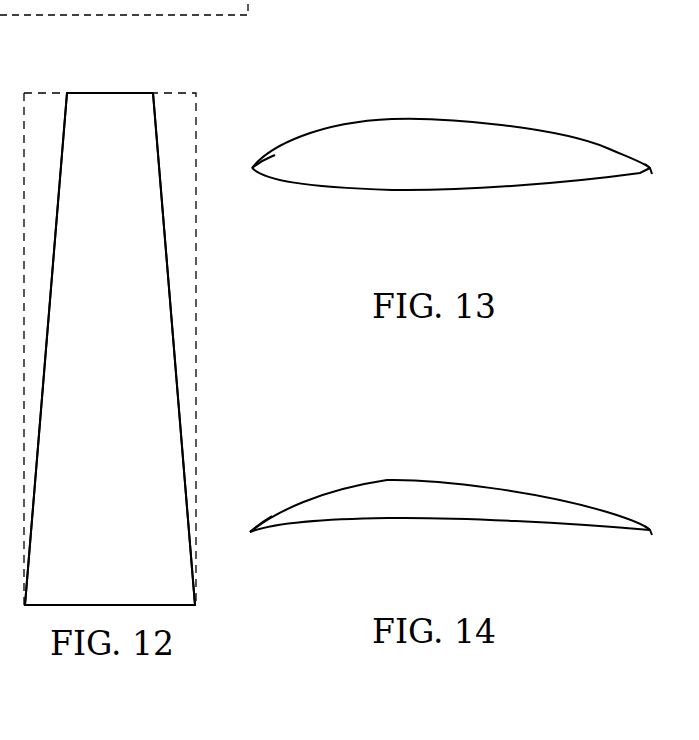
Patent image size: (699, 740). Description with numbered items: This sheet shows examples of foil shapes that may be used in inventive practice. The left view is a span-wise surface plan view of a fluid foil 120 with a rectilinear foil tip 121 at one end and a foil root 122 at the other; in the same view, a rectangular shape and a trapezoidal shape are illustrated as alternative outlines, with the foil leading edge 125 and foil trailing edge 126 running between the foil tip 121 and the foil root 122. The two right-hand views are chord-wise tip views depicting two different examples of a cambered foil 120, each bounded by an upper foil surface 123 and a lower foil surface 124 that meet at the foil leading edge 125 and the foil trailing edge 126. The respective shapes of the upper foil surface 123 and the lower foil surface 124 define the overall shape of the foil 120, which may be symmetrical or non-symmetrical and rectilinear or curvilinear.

In FIG. 12, the fluid foil 120 is at (130, 383).
In FIG. 12, the foil tip 121 is at (108, 92).
In FIG. 12, the foil root 122 is at (95, 604).
In FIG. 13, the upper foil surface 123 is at (430, 118).
In FIG. 14, the upper foil surface 123 is at (410, 480).
In FIG. 13, the lower foil surface 124 is at (440, 190).
In FIG. 14, the lower foil surface 124 is at (432, 522).
In FIG. 12, the foil leading edge 125 is at (52, 240).
In FIG. 13, the foil leading edge 125 is at (252, 170).
In FIG. 14, the foil leading edge 125 is at (250, 532).
In FIG. 12, the foil trailing edge 126 is at (165, 287).
In FIG. 13, the foil trailing edge 126 is at (651, 171).
In FIG. 14, the foil trailing edge 126 is at (651, 533).